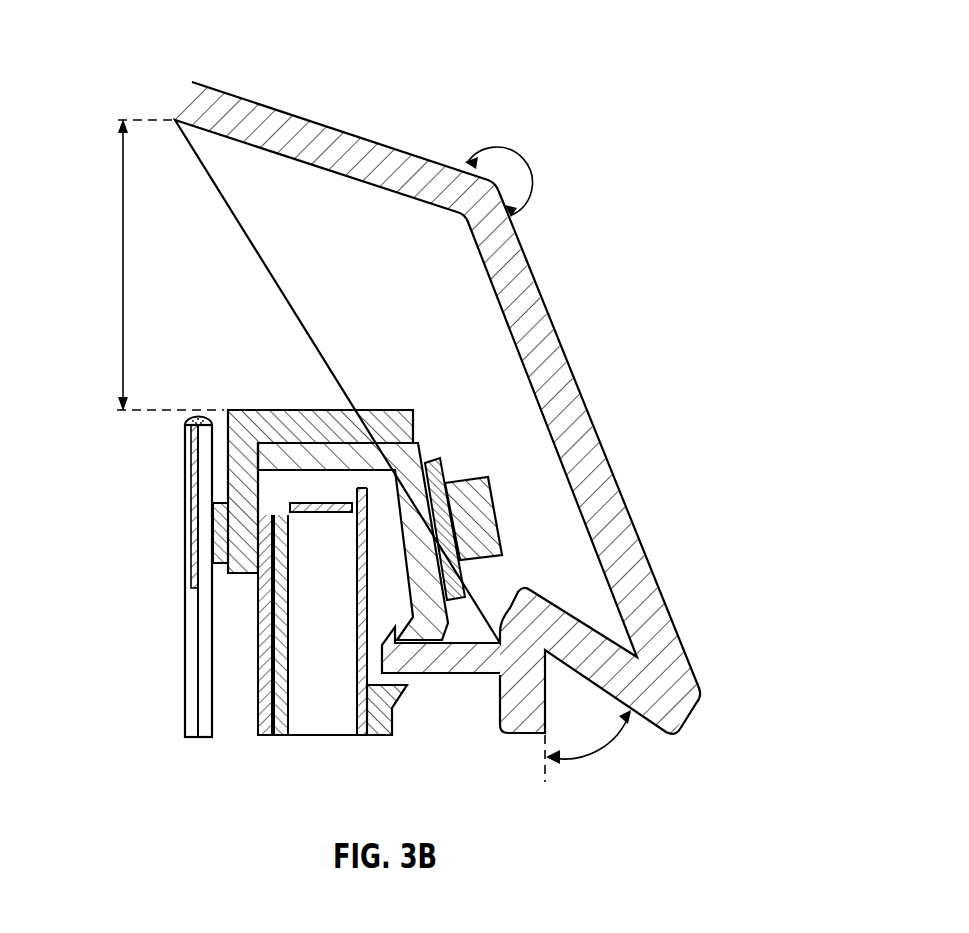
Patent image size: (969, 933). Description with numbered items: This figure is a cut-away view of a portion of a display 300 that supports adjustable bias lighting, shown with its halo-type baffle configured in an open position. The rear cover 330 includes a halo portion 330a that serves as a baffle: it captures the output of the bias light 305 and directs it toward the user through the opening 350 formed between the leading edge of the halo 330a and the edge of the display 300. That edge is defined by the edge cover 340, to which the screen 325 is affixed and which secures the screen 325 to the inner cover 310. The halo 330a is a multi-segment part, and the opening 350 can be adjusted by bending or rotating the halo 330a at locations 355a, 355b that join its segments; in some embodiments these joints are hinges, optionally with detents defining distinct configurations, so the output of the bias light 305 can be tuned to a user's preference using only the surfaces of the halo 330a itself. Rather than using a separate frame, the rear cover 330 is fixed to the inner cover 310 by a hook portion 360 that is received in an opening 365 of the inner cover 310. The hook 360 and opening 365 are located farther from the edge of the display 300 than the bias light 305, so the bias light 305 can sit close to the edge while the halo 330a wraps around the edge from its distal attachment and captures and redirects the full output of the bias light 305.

The display 300 is at (160, 58).
The bias light 305 is at (488, 532).
The inner cover 310 is at (422, 527).
The screen 325 is at (177, 532).
The rear cover 330 is at (525, 720).
The halo portion 330a is at (543, 323).
The edge cover 340 is at (320, 432).
The opening 350 is at (123, 275).
The bending location 355a is at (597, 760).
The bending location 355b is at (529, 152).
The hook portion 360 is at (425, 668).
The opening 365 is at (382, 690).